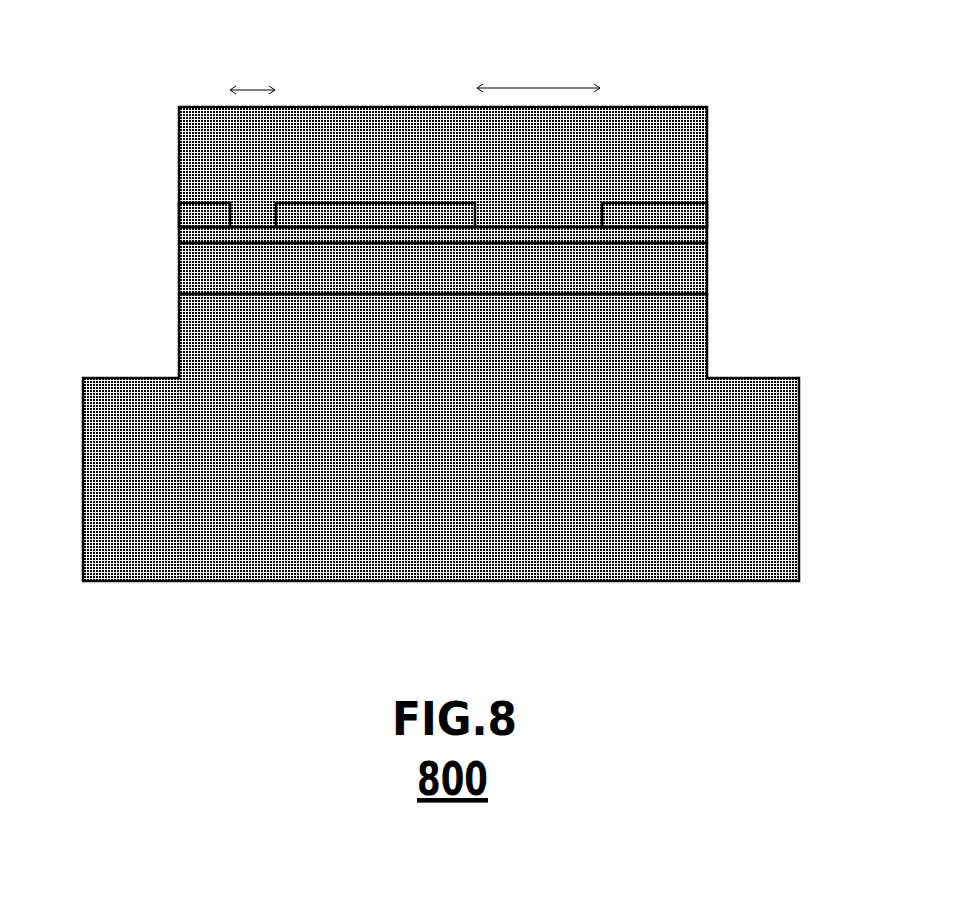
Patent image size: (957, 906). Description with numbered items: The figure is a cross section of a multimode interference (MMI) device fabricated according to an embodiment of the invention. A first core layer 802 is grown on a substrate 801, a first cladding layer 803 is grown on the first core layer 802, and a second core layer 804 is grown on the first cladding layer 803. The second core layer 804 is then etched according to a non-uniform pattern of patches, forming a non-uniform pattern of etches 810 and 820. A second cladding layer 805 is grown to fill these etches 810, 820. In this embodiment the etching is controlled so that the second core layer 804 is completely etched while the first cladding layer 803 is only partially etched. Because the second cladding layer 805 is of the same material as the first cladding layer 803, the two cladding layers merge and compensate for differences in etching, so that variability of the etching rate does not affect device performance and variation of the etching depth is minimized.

The substrate 801 is at (799, 432).
The first core layer 802 is at (707, 278).
The first cladding layer 803 is at (707, 223).
The second core layer 804 is at (178, 220).
The second cladding layer 805 is at (707, 172).
The etch 810 is at (245, 213).
The etch 820 is at (565, 215).